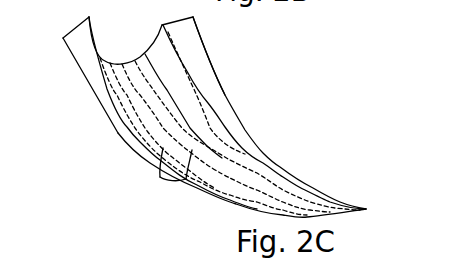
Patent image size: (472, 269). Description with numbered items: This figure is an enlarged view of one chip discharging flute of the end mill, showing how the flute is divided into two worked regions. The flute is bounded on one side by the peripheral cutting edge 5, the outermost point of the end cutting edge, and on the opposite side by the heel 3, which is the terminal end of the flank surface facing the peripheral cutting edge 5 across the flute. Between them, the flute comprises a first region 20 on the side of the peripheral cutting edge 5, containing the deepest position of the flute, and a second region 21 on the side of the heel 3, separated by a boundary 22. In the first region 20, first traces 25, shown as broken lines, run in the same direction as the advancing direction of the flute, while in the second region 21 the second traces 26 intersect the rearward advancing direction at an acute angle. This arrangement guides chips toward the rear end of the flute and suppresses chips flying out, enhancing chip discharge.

The heel 3 is at (175, 46).
The peripheral cutting edge 5 is at (101, 73).
The first region 20 is at (132, 101).
The second region 21 is at (174, 74).
The boundary 22 is at (180, 99).
The first traces 25 is at (160, 177).
The second traces 26 is at (128, 57).